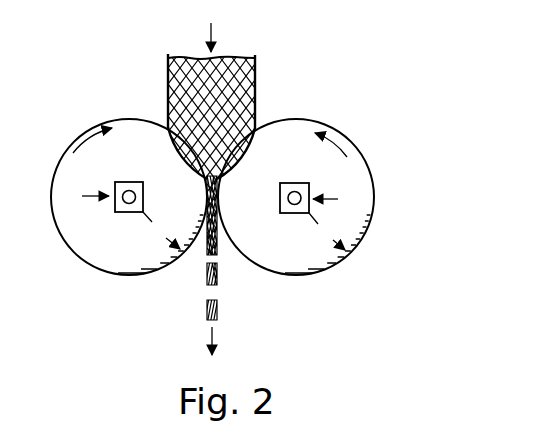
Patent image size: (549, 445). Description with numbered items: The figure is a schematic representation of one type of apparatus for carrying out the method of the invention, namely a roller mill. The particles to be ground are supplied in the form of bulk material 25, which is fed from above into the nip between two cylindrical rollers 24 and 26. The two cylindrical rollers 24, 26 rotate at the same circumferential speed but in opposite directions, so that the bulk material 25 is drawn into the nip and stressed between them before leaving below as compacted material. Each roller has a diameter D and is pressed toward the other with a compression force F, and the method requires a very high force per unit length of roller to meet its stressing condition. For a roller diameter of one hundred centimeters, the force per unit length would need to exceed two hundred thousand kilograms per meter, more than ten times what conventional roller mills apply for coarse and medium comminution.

The cylindrical roller 24 is at (90, 129).
The bulk material 25 is at (222, 60).
The cylindrical roller 26 is at (341, 141).